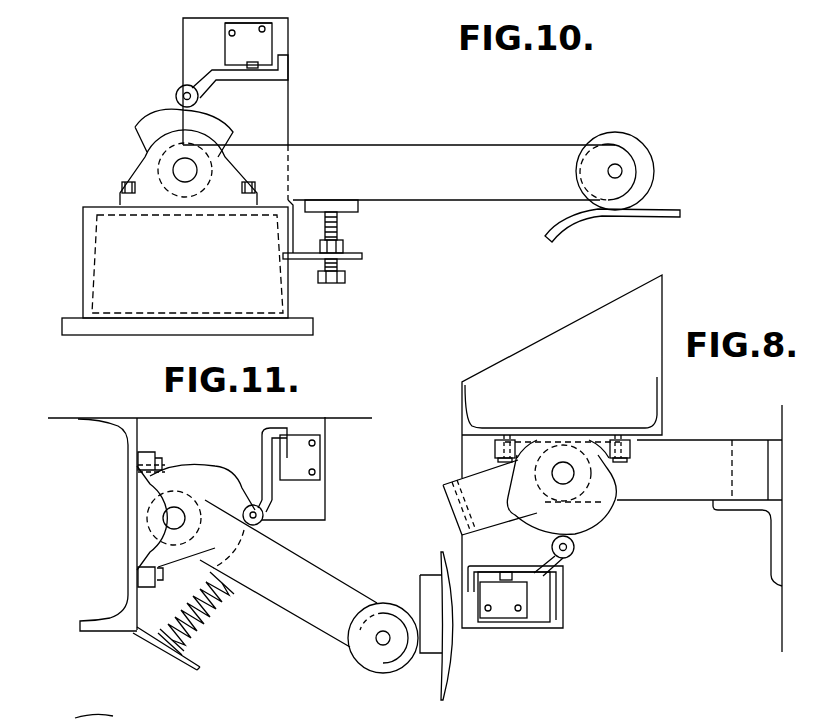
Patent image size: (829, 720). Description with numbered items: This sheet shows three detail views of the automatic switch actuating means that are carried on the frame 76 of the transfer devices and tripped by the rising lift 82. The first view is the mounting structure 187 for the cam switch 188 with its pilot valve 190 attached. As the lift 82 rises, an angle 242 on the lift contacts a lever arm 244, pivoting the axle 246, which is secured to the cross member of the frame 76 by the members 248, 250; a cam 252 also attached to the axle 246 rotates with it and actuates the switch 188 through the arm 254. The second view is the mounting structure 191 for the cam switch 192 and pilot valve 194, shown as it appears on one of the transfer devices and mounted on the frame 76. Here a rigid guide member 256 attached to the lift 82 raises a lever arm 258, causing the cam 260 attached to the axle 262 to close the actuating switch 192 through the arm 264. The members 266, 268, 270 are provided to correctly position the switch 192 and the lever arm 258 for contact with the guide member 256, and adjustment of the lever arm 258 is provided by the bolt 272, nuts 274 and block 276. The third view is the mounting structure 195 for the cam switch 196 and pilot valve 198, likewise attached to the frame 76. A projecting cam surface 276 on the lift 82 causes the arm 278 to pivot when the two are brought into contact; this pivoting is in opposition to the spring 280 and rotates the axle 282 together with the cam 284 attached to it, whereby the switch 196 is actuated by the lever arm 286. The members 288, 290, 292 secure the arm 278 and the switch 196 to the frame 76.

In FIG. 11, the frame 76 is at (66, 421).
In FIG. 8, the lift 82 is at (782, 630).
In FIG. 11, the lift 82 is at (448, 693).
In FIG. 8, the mounting structure 187 is at (663, 585).
In FIG. 8, the cam switch 188 is at (500, 604).
In FIG. 8, the pilot valve 190 is at (528, 603).
In FIG. 10, the mounting structure 191 is at (403, 127).
In FIG. 10, the cam switch 192 is at (250, 64).
In FIG. 10, the pilot valve 194 is at (242, 21).
In FIG. 11, the mounting structure 195 is at (350, 522).
In FIG. 11, the cam switch 196 is at (272, 460).
In FIG. 11, the pilot valve 198 is at (322, 462).
In FIG. 8, the angle 242 is at (772, 547).
In FIG. 8, the lever arm 244 is at (700, 442).
In FIG. 8, the axle 246 is at (567, 468).
In FIG. 8, the member 248 is at (565, 328).
In FIG. 8, the member 250 is at (527, 433).
In FIG. 8, the cam 252 is at (598, 522).
In FIG. 8, the arm 254 is at (563, 567).
In FIG. 10, the rigid guide member 256 is at (673, 210).
In FIG. 10, the lever arm 258 is at (508, 145).
In FIG. 10, the cam 260 is at (140, 118).
In FIG. 10, the axle 262 is at (178, 198).
In FIG. 10, the arm 264 is at (226, 78).
In FIG. 10, the member 266 is at (288, 106).
In FIG. 10, the member 268 is at (201, 208).
In FIG. 10, the member 270 is at (100, 336).
In FIG. 10, the bolt 272 is at (346, 278).
In FIG. 10, the nuts 274 is at (344, 247).
In FIG. 10, the block 276 is at (358, 208).
In FIG. 11, the block 276 is at (433, 673).
In FIG. 11, the arm 278 is at (322, 635).
In FIG. 11, the spring 280 is at (200, 638).
In FIG. 11, the axle 282 is at (165, 519).
In FIG. 11, the cam 284 is at (227, 475).
In FIG. 11, the lever arm 286 is at (272, 506).
In FIG. 11, the member 288 is at (327, 495).
In FIG. 11, the member 290 is at (132, 563).
In FIG. 11, the member 292 is at (135, 478).